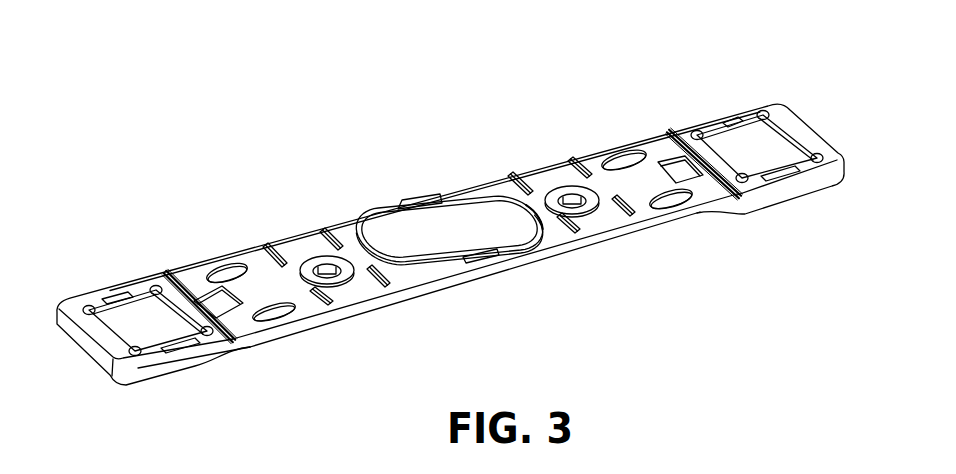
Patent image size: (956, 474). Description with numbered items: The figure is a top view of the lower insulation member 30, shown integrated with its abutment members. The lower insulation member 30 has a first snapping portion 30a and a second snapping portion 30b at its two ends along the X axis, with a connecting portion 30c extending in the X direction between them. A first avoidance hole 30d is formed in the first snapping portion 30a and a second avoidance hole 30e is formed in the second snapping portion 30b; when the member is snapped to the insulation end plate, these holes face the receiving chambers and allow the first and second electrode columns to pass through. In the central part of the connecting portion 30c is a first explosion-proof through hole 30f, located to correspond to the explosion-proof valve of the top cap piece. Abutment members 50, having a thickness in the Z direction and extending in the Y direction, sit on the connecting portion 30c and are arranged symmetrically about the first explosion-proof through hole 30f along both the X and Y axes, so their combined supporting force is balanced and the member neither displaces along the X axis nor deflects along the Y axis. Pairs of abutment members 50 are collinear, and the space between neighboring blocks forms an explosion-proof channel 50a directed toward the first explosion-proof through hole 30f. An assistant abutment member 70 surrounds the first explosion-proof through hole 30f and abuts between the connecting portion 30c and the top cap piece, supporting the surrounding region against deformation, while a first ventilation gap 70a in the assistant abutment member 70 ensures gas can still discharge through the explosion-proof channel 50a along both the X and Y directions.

The lower insulation member 30 is at (256, 108).
The first snapping portion 30a is at (73, 313).
The second snapping portion 30b is at (800, 132).
The connecting portion 30c is at (560, 180).
The first avoidance hole 30d is at (135, 342).
The second avoidance hole 30e is at (725, 150).
The first explosion-proof through hole 30f is at (453, 230).
The abutment member 50 is at (330, 228).
The explosion-proof channel 50a is at (293, 275).
The assistant abutment member 70 is at (400, 267).
The first ventilation gap 70a is at (533, 210).